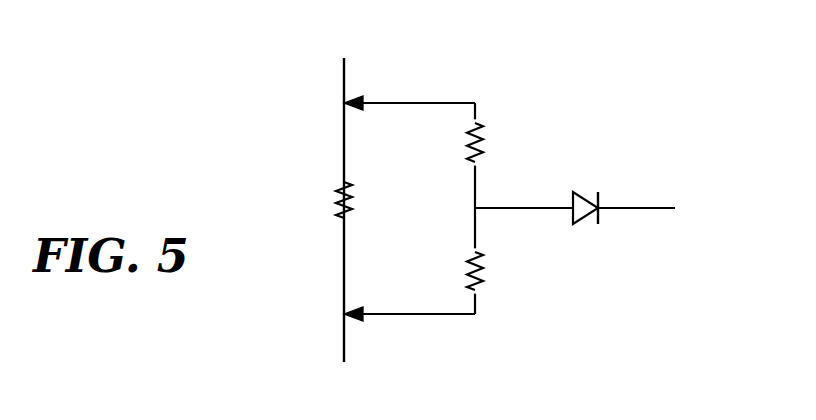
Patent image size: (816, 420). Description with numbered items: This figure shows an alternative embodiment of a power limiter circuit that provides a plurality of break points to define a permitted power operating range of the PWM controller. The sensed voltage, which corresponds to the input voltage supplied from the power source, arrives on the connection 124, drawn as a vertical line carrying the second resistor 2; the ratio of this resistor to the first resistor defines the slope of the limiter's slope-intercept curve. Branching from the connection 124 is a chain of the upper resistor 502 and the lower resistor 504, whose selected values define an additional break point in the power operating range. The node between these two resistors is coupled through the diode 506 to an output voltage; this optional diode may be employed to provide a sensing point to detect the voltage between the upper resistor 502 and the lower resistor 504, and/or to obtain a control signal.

The connection 124 is at (344, 78).
The resistor R2 2 is at (324, 201).
The resistor R502 502 is at (498, 142).
The resistor R504 504 is at (501, 271).
The diode D506 506 is at (589, 203).